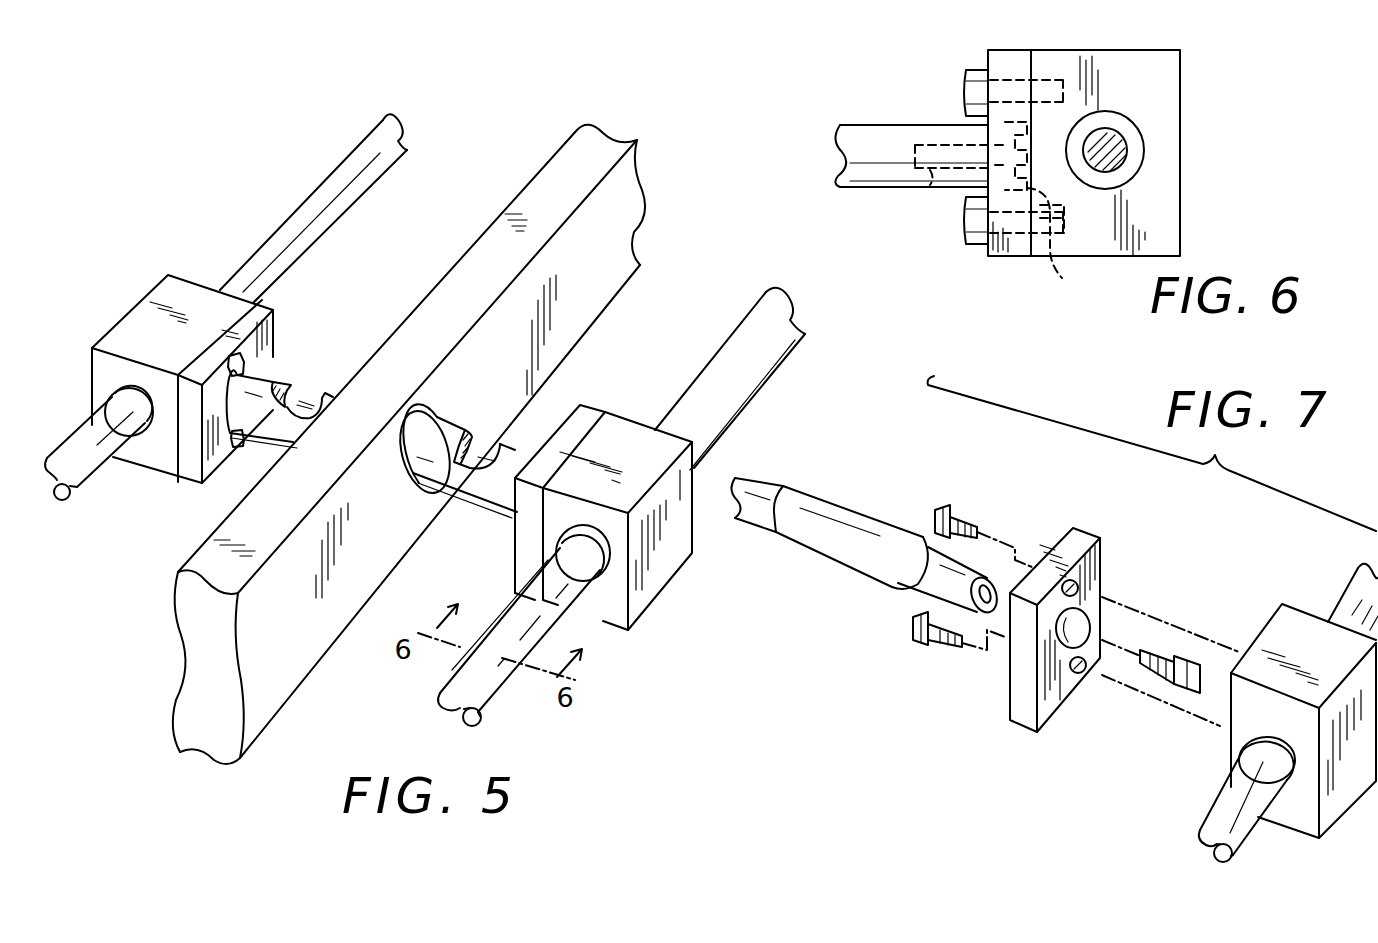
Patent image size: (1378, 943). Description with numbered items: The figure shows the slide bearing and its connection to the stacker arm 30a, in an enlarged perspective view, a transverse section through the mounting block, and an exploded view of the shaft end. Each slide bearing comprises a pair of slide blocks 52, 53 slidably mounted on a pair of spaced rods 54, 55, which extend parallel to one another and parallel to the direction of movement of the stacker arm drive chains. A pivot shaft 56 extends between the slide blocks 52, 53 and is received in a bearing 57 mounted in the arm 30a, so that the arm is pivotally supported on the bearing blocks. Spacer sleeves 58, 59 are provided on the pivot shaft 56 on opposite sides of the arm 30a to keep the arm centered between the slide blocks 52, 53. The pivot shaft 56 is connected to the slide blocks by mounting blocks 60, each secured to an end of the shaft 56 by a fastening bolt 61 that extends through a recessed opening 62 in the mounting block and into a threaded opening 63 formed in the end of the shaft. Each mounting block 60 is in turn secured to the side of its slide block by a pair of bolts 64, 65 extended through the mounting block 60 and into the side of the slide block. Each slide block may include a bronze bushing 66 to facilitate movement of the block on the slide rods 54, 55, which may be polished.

In FIG. 5, the arm 30a is at (634, 232).
In FIG. 5, the slide block 52 is at (182, 290).
In FIG. 5, the slide block 53 is at (682, 500).
In FIG. 6, the slide block 53 is at (1108, 65).
In FIG. 7, the slide block 53 is at (1274, 624).
In FIG. 5, the rod 54 is at (353, 173).
In FIG. 5, the rod 55 is at (749, 352).
In FIG. 6, the rod 55 is at (1122, 143).
In FIG. 7, the rod 55 is at (1350, 590).
In FIG. 5, the pivot shaft 56 is at (300, 404).
In FIG. 6, the pivot shaft 56 is at (870, 137).
In FIG. 7, the pivot shaft 56 is at (927, 570).
In FIG. 5, the bearing 57 is at (429, 413).
In FIG. 5, the spacer sleeve 58 is at (262, 380).
In FIG. 5, the spacer sleeve 59 is at (450, 436).
In FIG. 7, the spacer sleeve 59 is at (833, 507).
In FIG. 5, the mounting block 60 is at (587, 412).
In FIG. 6, the mounting block 60 is at (1015, 63).
In FIG. 7, the mounting block 60 is at (1080, 540).
In FIG. 6, the fastening bolt 61 is at (930, 182).
In FIG. 7, the fastening bolt 61 is at (1172, 660).
In FIG. 6, the recessed opening 62 is at (1053, 253).
In FIG. 7, the recessed opening 62 is at (1062, 637).
In FIG. 7, the threaded opening 63 is at (993, 580).
In FIG. 6, the bolt 64 is at (967, 90).
In FIG. 7, the bolt 64 is at (967, 517).
In FIG. 6, the bolt 65 is at (975, 240).
In FIG. 7, the bolt 65 is at (938, 647).
In FIG. 5, the bronze bushing 66 is at (610, 573).
In FIG. 6, the bronze bushing 66 is at (1132, 167).
In FIG. 7, the bronze bushing 66 is at (1251, 730).